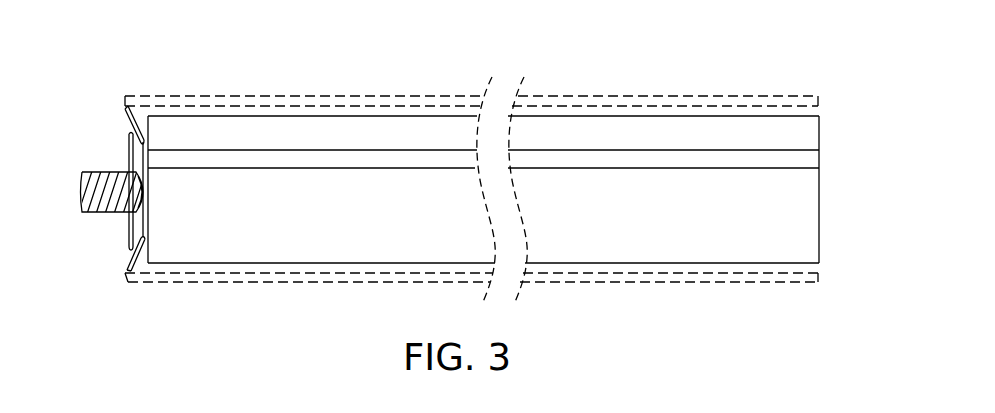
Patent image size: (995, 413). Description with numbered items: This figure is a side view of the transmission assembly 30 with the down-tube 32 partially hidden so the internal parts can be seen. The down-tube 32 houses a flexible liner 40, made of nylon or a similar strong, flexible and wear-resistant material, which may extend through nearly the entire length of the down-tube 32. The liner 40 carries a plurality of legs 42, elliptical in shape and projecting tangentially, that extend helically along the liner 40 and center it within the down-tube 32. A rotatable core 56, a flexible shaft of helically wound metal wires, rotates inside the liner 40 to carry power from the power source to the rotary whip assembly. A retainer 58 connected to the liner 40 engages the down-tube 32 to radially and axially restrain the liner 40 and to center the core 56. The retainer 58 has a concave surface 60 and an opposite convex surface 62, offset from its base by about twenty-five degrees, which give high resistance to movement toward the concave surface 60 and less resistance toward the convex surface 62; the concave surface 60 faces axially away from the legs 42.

The transmission assembly 30 is at (689, 48).
The down-tube 32 is at (317, 284).
The flexible liner 40 is at (657, 243).
The legs 42 is at (354, 131).
The core 56 is at (100, 170).
The retainer 58 is at (124, 230).
The concave surface 60 is at (116, 123).
The convex surface 62 is at (143, 152).